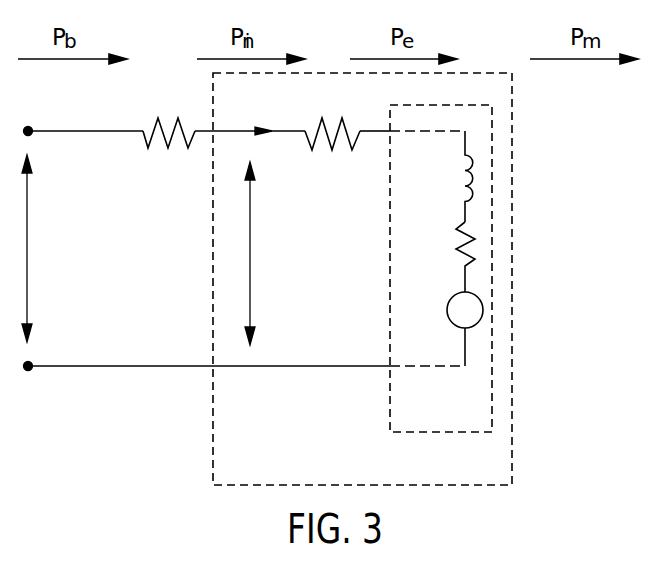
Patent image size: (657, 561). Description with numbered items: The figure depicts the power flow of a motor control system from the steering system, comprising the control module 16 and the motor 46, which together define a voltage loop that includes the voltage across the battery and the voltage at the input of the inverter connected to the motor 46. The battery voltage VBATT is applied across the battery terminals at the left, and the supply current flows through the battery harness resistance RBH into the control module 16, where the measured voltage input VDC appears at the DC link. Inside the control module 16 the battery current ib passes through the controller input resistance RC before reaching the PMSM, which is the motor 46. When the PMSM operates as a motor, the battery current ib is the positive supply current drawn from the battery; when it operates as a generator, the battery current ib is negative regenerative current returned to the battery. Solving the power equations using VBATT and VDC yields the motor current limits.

The control module 16 is at (514, 448).
The motor 46 is at (491, 209).
The battery harness resistance RBH is at (169, 113).
The controller input resistance RC is at (332, 114).
The battery current ib is at (262, 110).
The battery voltage VBATT is at (51, 248).
The voltage input VDC is at (269, 253).